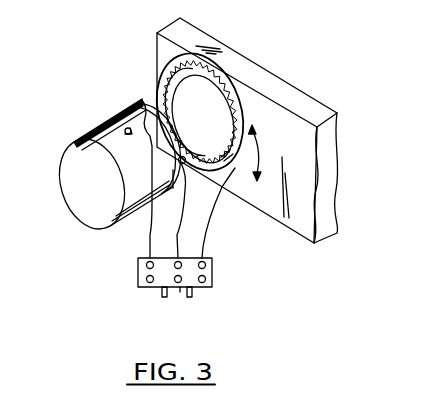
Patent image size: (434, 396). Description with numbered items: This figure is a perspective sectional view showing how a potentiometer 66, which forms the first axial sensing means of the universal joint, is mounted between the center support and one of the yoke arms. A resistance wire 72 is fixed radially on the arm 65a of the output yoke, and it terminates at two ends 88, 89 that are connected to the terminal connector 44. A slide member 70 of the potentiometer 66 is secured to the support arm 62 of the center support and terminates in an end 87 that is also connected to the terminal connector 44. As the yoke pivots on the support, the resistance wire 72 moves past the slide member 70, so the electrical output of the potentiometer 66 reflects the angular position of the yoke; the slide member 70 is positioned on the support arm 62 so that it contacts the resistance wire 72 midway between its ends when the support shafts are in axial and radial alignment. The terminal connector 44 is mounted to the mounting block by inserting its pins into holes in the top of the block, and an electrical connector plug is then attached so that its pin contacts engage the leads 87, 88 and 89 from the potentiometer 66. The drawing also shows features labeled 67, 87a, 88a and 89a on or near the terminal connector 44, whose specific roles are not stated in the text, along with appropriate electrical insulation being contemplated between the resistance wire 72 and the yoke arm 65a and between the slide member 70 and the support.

The terminal connector 44 is at (212, 286).
The support arm 62 is at (123, 110).
The yoke arm 65a is at (307, 107).
The potentiometer 66 is at (82, 198).
The mounting legs 67 is at (160, 299).
The slide member 70 is at (125, 128).
The resistance wire 72 is at (178, 77).
The end of slide member 87 is at (147, 233).
The left arm terminal 87a is at (140, 281).
The end of resistance wire 88 is at (180, 232).
The center lead 88a is at (180, 288).
The end of resistance wire 89 is at (205, 247).
The right arm terminal 89a is at (206, 279).